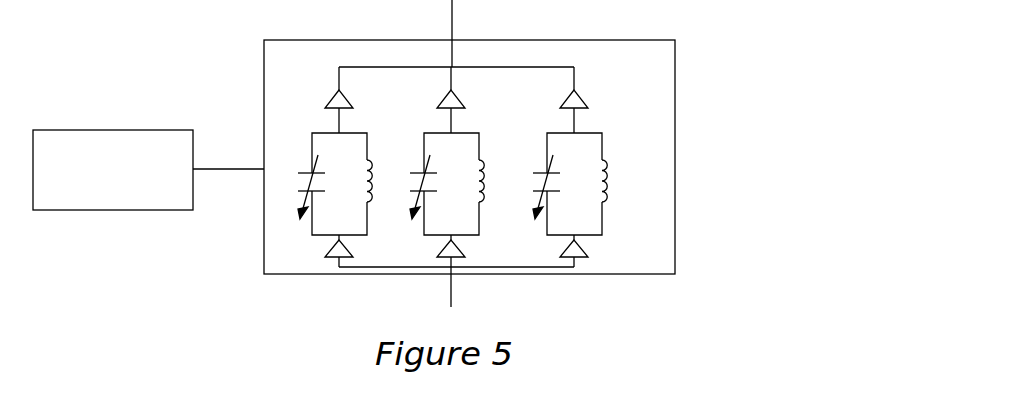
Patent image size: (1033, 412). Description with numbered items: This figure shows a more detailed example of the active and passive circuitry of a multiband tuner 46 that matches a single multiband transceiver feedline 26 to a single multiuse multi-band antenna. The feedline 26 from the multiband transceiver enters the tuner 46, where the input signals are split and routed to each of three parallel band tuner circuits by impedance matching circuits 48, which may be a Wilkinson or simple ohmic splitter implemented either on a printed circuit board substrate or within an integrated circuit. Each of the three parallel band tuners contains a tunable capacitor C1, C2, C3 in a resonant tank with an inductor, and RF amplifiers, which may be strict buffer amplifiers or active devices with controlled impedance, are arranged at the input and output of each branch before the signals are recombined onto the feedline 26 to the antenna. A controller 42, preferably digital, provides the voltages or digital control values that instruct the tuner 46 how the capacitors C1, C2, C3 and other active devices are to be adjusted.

The feedline 26 is at (452, 14).
The tuner controller 42 is at (113, 170).
The tuner 46 is at (675, 63).
The impedance matching circuits 48 is at (652, 148).
The variable capacitor tank circuit 1 C1 is at (328, 184).
The variable capacitor tank circuit 2 C2 is at (440, 184).
The variable capacitor tank circuit 3 C3 is at (563, 184).